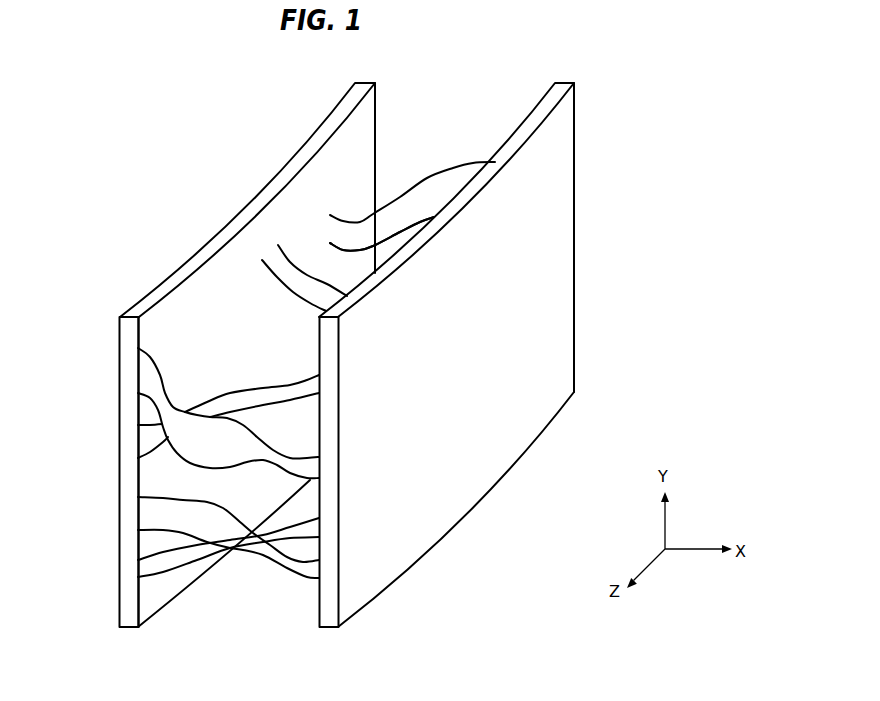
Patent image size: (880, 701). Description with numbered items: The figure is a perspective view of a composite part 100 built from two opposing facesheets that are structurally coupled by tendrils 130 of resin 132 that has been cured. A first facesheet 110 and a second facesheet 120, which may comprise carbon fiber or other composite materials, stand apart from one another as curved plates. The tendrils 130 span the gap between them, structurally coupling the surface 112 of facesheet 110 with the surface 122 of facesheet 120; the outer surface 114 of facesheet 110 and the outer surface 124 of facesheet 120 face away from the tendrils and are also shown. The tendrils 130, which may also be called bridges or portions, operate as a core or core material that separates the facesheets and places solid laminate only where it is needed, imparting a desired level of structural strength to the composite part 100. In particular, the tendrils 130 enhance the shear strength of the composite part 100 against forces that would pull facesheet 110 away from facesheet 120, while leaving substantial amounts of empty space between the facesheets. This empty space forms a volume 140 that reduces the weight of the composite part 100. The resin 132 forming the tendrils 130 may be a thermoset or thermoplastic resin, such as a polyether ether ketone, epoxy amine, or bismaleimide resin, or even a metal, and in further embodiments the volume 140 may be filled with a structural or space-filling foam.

The composite part 100 is at (539, 501).
The facesheet 110 is at (119, 598).
The surface 112 is at (203, 333).
The outer surface 114 is at (108, 408).
The facesheet 120 is at (574, 342).
The surface 122 is at (307, 605).
The outer surface 124 is at (565, 265).
The tendrils 130 is at (457, 168).
The resin 132 is at (411, 204).
The volume 140 is at (443, 72).